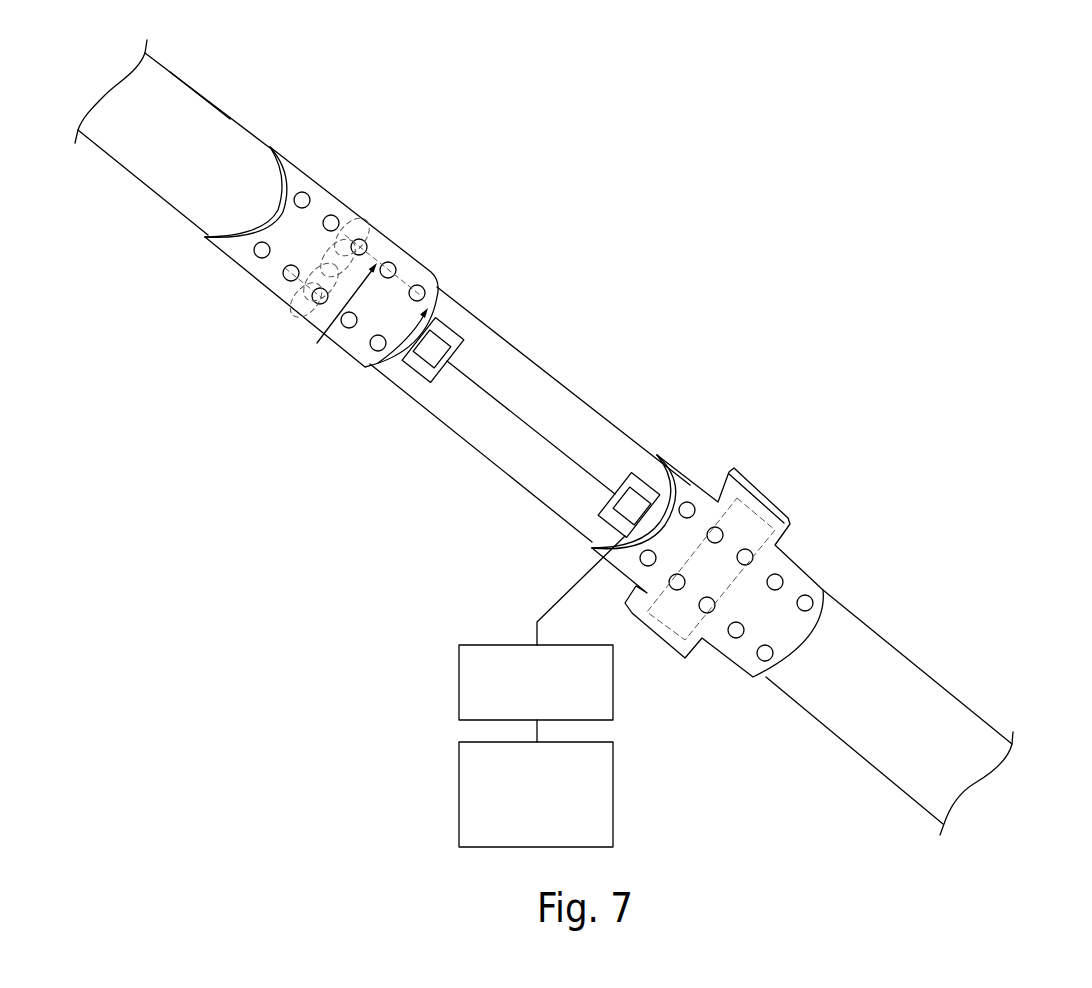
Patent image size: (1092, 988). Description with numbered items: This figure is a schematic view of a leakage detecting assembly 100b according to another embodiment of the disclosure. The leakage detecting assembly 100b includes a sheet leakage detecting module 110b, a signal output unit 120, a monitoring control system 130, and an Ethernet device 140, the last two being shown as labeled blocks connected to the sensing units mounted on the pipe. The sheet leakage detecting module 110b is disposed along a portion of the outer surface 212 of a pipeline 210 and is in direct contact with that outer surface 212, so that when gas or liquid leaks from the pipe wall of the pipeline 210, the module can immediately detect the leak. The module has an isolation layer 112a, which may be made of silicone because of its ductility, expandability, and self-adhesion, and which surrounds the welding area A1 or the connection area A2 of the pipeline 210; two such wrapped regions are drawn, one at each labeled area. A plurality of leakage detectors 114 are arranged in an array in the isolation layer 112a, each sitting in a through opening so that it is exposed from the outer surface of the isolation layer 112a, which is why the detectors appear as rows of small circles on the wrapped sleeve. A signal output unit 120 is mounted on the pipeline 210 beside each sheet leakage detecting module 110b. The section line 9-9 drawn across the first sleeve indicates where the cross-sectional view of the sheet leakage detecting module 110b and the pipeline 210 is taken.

The pipeline 210 is at (195, 104).
The outer surface 212 is at (240, 134).
The sheet leakage detecting module 110b is at (514, 373).
The isolation layer 112a is at (328, 203).
The leakage detectors 114 is at (304, 193).
The signal output unit 120 is at (443, 337).
The monitoring control system 130 is at (459, 792).
The Ethernet device 140 is at (459, 681).
The leakage detecting assembly 100b is at (1016, 40).
The line 9- 9 is at (365, 331).
The welding area A1 is at (372, 224).
The connection area A2 is at (750, 518).